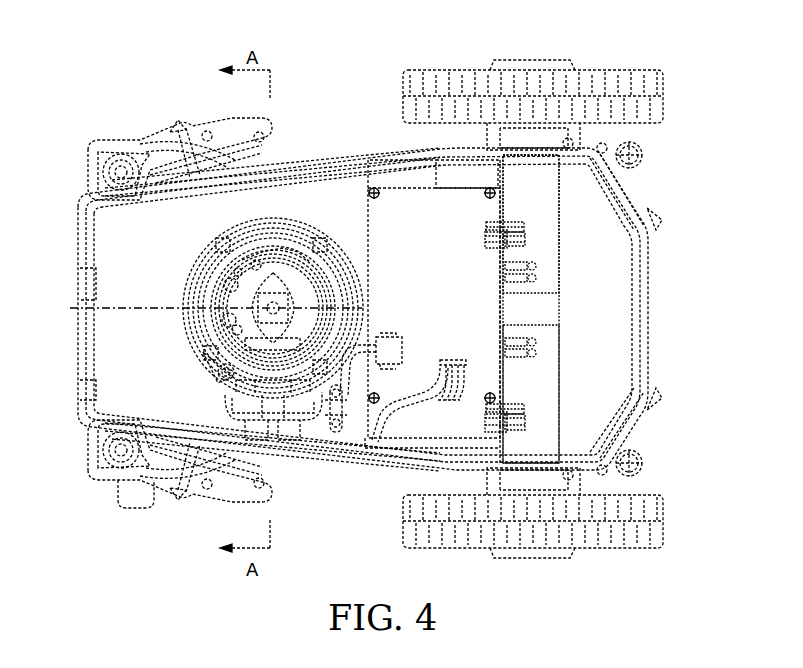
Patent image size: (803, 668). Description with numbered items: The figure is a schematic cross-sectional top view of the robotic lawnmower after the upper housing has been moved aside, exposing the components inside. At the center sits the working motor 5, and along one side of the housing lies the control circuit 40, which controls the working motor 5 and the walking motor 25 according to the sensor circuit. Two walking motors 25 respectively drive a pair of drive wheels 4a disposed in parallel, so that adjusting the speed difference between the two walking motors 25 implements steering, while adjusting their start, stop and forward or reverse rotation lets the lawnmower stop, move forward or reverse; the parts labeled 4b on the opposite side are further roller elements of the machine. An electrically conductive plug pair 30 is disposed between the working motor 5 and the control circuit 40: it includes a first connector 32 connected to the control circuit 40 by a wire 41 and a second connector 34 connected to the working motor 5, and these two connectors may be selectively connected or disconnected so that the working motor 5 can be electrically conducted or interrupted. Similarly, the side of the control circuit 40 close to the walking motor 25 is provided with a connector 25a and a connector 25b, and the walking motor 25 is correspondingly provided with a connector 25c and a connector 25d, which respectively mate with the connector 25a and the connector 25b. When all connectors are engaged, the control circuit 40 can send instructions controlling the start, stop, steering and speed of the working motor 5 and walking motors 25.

The drive wheels 4a is at (612, 82).
The driving motor assembly 4b is at (112, 185).
The working motor 5 is at (214, 278).
The walking motor 25 is at (562, 212).
The connector 25a is at (528, 240).
The connector 25b is at (520, 228).
The connector 25c is at (538, 280).
The connector 25d is at (538, 268).
The electrically conductive plug pair 30 is at (268, 313).
The first connector 32 is at (403, 346).
The second connector 34 is at (460, 360).
The control circuit 40 is at (377, 226).
The wire 41 is at (340, 432).